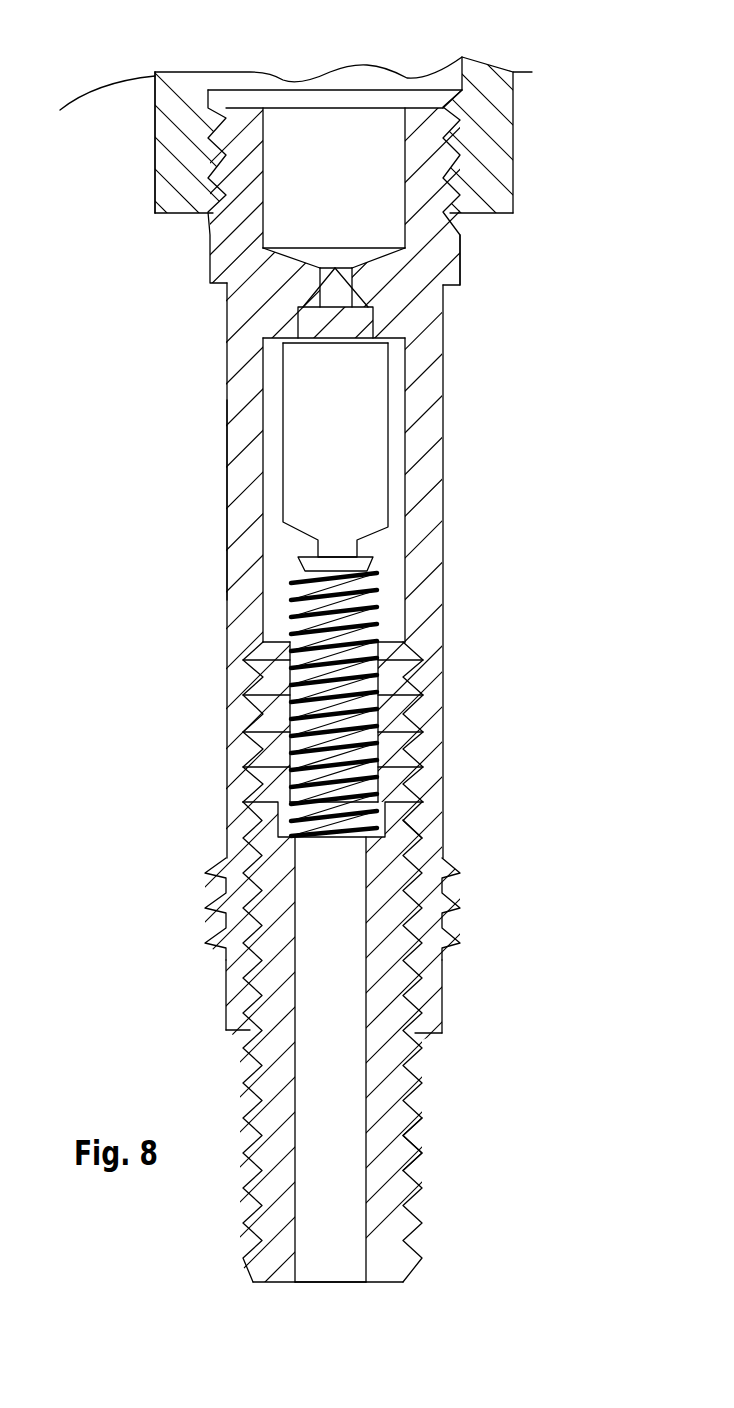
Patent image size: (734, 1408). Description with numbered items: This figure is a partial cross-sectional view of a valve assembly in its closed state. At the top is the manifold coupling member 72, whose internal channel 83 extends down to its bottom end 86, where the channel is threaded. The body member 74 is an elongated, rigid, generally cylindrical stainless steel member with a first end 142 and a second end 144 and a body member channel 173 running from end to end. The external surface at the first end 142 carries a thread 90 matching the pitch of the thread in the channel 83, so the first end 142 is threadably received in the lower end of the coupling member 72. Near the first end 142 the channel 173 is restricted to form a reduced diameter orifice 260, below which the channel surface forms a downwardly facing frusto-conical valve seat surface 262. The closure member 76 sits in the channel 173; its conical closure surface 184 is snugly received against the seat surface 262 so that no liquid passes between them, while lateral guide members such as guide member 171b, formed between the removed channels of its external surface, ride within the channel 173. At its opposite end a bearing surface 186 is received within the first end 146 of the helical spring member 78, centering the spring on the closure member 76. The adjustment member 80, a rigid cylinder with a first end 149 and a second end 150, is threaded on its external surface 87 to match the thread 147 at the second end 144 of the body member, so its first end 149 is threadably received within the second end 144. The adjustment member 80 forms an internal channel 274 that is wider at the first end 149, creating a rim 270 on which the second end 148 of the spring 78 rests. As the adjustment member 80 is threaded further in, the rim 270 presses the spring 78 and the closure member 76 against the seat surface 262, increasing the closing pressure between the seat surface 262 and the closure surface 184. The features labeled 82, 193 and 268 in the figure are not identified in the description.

The manifold coupling member 72 is at (513, 125).
The body member 74 is at (443, 393).
The closure member 76 is at (333, 427).
The spring member 78 is at (420, 712).
The adjustment member 80 is at (413, 1087).
The cap 82 is at (460, 64).
The internal channel 83 is at (215, 112).
The bottom end 86 is at (173, 215).
The external thread 87 is at (417, 1157).
The external thread 90 is at (447, 143).
The first end 142 is at (213, 158).
The second end 144 is at (240, 1030).
The first end 146 is at (292, 572).
The thread at second end of body member 147 is at (407, 818).
The second end 148 is at (226, 860).
The first end 149 is at (430, 840).
The second end 150 is at (308, 1282).
The lateral guide member 171b is at (263, 462).
The body member channel 173 is at (285, 540).
The conical closure surface 184 is at (318, 270).
The bearing surface 186 is at (360, 575).
The groove 193 is at (452, 172).
The reduced diameter orifice 260 is at (298, 326).
The valve seat surface 262 is at (352, 270).
The spring retainer 268 is at (345, 768).
The rim 270 is at (330, 830).
The internal channel 274 is at (298, 997).